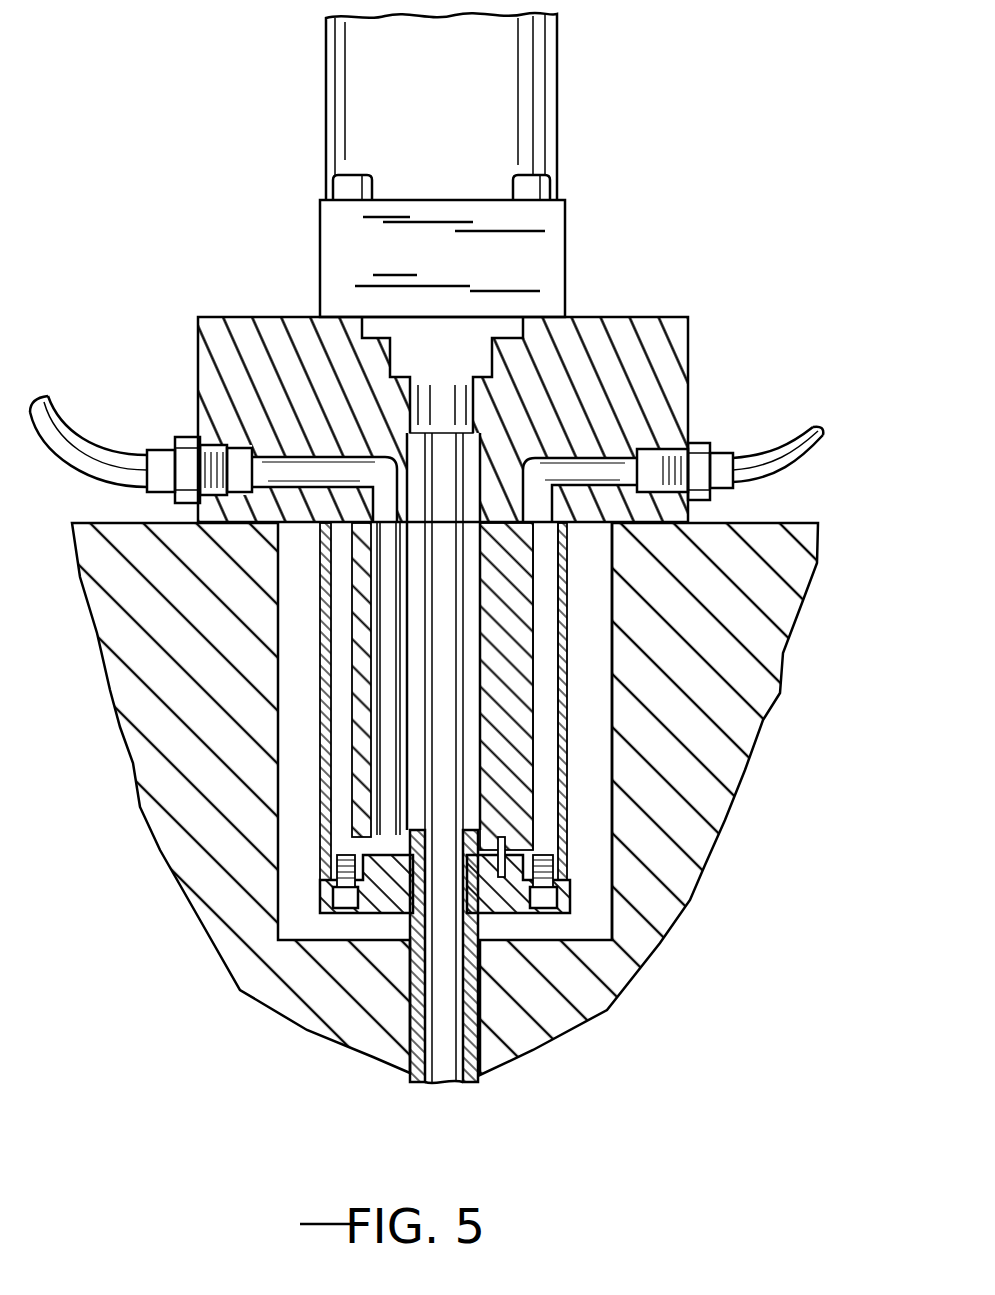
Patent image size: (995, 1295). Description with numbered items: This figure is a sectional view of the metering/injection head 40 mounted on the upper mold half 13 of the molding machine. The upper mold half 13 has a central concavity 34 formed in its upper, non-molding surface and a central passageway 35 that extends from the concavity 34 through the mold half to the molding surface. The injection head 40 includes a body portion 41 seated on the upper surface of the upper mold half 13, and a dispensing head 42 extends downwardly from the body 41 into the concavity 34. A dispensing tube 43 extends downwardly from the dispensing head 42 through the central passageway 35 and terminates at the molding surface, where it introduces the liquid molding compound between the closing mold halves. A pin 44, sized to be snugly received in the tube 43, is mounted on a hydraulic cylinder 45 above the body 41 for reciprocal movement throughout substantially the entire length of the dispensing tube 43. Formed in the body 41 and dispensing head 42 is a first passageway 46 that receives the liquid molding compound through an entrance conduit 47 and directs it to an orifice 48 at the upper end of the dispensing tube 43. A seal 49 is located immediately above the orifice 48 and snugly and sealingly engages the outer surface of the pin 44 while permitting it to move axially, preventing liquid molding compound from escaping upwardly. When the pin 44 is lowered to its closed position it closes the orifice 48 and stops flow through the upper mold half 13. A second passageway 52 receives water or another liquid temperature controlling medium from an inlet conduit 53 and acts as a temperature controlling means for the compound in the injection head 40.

The upper mold half 13 is at (140, 692).
The central concavity 34 is at (597, 762).
The central passageway 35 is at (410, 1020).
The injection head 40 is at (567, 160).
The body portion 41 is at (672, 372).
The dispensing head 42 is at (320, 728).
The dispensing tube 43 is at (480, 1043).
The pin 44 is at (447, 682).
The hydraulic cylinder 45 is at (457, 107).
The first passageway 46 is at (288, 468).
The entrance conduit 47 is at (95, 440).
The orifice 48 is at (398, 870).
The seal 49 is at (493, 865).
The second passageway 52 is at (592, 465).
The inlet conduit 53 is at (783, 450).